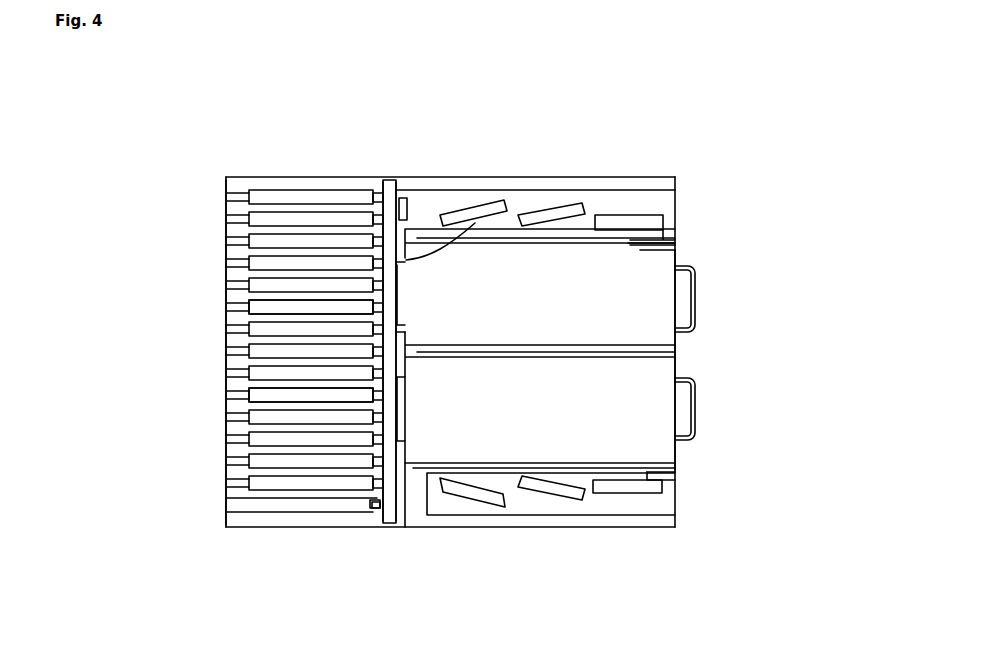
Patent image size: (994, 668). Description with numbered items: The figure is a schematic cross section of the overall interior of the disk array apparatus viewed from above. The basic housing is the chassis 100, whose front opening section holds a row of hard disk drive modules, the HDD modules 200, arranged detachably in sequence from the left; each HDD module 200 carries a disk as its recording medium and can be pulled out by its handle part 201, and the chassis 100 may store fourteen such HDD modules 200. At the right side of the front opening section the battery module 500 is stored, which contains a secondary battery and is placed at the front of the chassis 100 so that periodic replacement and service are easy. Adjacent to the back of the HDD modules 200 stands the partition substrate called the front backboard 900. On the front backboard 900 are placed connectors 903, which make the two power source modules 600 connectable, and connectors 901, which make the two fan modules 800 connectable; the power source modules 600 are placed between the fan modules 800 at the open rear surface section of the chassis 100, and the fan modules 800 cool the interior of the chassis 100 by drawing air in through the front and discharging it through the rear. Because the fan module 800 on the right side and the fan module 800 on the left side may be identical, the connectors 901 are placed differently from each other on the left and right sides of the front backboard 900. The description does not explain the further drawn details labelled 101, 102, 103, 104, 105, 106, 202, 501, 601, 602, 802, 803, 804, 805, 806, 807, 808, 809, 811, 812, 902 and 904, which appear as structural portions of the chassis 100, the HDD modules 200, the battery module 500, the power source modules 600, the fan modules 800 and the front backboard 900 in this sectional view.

The chassis 100 is at (228, 186).
The housing side wall 101 is at (231, 194).
The contact terminal 102 is at (258, 296).
The contact terminal 103 is at (263, 402).
The housing mating face wall 104 is at (668, 222).
The partition plate 105 is at (630, 357).
The lower receiving cavity wall 106 is at (667, 483).
The HDD module 200 is at (285, 198).
The handle part 201 is at (245, 199).
The second contact 202 is at (362, 216).
The battery module 500 is at (255, 505).
The contact connecting portion 501 is at (370, 505).
The power source module 600 is at (658, 283).
The latch 601 is at (695, 302).
The plug contact 602 is at (405, 288).
The fan module 800 is at (642, 190).
The first spring contact 802 is at (490, 205).
The second spring contact 803 is at (548, 220).
The grounding plate 804 is at (617, 222).
The shell upper wall 805 is at (408, 229).
The first spring contact tip 806 is at (510, 203).
The second spring contact tip 807 is at (587, 210).
The shell end piece 808 is at (663, 233).
The shell inner contact 809 is at (388, 260).
The shell flange 811 is at (675, 243).
The shell lip 812 is at (680, 250).
The front backboard 900 is at (390, 178).
The connector 901 is at (407, 197).
The board front face 902 is at (383, 190).
The connector 903 is at (405, 305).
The board solder joint 904 is at (373, 510).